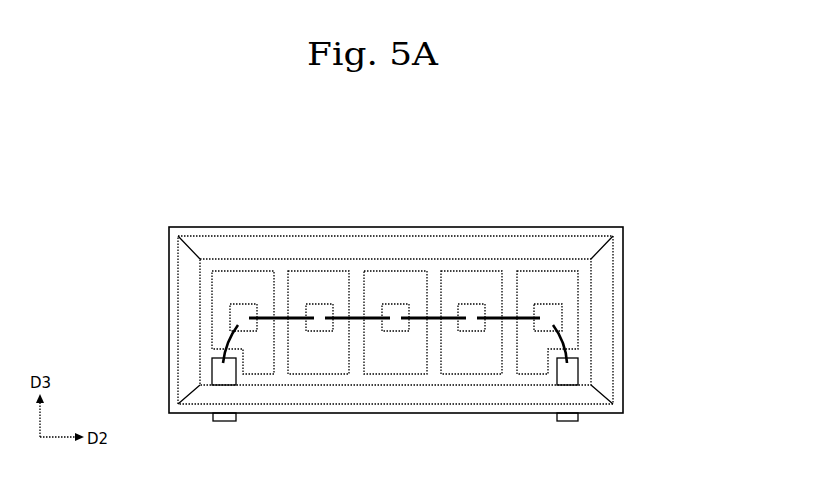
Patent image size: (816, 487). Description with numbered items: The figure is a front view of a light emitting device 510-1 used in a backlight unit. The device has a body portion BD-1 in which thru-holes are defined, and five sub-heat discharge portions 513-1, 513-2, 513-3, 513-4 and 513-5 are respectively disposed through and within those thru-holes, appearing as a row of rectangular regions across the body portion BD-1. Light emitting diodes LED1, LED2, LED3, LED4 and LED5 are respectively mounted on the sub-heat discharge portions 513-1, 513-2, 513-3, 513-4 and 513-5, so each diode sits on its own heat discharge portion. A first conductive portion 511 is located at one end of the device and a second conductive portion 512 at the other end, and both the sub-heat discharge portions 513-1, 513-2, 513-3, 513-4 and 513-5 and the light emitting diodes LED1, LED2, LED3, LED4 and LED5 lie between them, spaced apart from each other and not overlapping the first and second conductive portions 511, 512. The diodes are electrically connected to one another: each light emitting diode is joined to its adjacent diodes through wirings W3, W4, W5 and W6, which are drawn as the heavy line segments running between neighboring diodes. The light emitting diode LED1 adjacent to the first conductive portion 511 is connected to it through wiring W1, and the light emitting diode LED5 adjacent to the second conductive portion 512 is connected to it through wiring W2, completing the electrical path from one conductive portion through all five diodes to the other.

The light emitting device 510-1 is at (619, 167).
The body portion BD-1 is at (585, 298).
The sub-heat discharge portion 513-1 is at (258, 271).
The sub-heat discharge portion 513-2 is at (343, 271).
The sub-heat discharge portion 513-3 is at (418, 271).
The sub-heat discharge portion 513-4 is at (495, 271).
The sub-heat discharge portion 513-5 is at (572, 271).
The light emitting diode LED1 is at (243, 304).
The light emitting diode LED2 is at (318, 304).
The light emitting diode LED3 is at (395, 304).
The light emitting diode LED4 is at (471, 304).
The light emitting diode LED5 is at (548, 304).
The wiring W1 is at (222, 341).
The wiring W2 is at (565, 343).
The wiring W3 is at (284, 322).
The wiring W4 is at (358, 322).
The wiring W5 is at (435, 322).
The wiring W6 is at (510, 322).
The first conductive portion 511 is at (223, 375).
The second conductive portion 512 is at (568, 370).